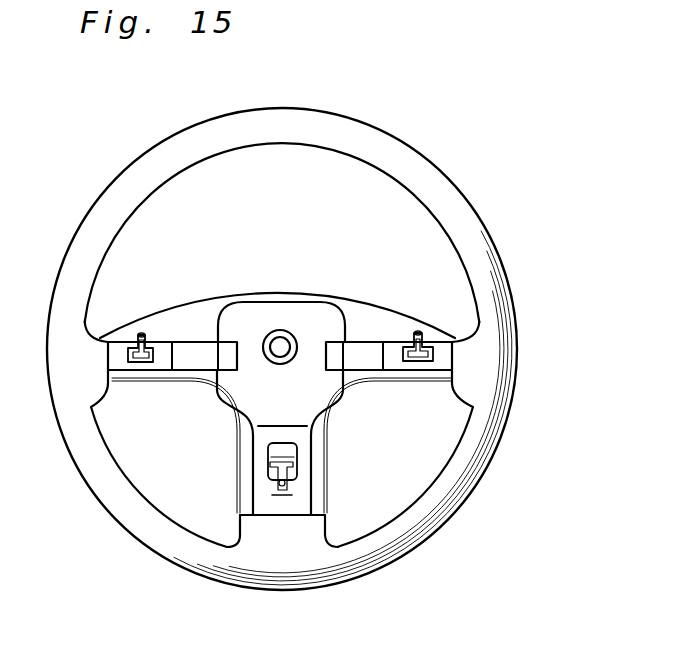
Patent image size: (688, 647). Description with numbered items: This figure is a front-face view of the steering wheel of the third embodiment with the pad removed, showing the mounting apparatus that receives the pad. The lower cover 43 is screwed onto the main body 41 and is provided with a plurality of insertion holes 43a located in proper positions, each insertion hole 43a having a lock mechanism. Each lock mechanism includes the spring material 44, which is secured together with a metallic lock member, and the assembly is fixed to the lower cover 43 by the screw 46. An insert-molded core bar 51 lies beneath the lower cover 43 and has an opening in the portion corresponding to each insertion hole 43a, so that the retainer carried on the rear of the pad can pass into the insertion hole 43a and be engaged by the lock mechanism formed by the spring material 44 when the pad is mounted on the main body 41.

The main body 41 is at (485, 354).
The lower cover 43 is at (330, 418).
The insertion hole 43a is at (145, 372).
The spring material 44 is at (138, 343).
The screw 46 is at (142, 334).
The core bar 51 is at (360, 352).